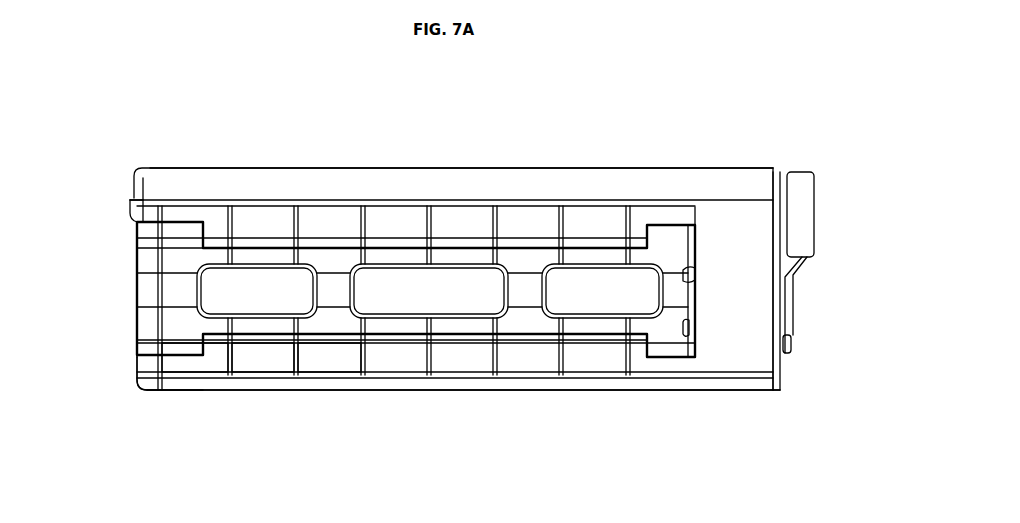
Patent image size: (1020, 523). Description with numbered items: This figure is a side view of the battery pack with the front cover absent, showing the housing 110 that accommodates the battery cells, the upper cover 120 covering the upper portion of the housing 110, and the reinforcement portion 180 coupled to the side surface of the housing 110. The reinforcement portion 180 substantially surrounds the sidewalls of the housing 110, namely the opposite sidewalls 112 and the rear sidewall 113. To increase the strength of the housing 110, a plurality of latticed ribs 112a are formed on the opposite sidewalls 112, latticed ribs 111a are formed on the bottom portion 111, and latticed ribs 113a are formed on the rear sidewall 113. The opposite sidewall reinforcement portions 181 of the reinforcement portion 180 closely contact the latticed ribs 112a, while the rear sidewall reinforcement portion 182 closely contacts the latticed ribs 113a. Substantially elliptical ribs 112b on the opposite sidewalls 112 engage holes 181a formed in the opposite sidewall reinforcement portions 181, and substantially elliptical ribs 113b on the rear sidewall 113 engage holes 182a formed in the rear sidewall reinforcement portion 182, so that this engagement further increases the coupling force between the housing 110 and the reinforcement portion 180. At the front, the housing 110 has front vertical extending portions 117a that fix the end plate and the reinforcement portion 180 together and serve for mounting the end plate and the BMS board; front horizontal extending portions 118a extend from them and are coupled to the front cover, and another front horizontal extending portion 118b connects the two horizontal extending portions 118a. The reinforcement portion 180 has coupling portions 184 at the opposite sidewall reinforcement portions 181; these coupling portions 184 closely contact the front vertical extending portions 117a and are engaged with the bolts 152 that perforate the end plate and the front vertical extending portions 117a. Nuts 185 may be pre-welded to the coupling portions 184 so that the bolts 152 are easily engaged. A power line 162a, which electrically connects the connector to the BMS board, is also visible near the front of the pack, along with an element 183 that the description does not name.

The housing 110 is at (176, 402).
The bottom portion 111 is at (583, 378).
The latticed ribs 111a is at (272, 378).
The sidewalls 112 is at (605, 360).
The latticed ribs 112a is at (343, 340).
The elliptical ribs 112b is at (253, 318).
The rear sidewall 113 is at (157, 222).
The latticed ribs 113a is at (137, 228).
The elliptical ribs 113b is at (135, 257).
The front vertical extending portions 117a is at (740, 297).
The front horizontal extending portions 118a is at (740, 247).
The front horizontal extending portion 118b is at (730, 393).
The upper cover 120 is at (536, 168).
The bolts 152 is at (683, 253).
The power line 162a is at (797, 275).
The reinforcement portion 180 is at (432, 336).
The opposite sidewall reinforcement portions 181 is at (527, 323).
The holes 181a is at (484, 305).
The rear sidewall reinforcement portion 182 is at (135, 340).
The holes 182a is at (137, 327).
The terminal block 183 is at (800, 172).
The coupling portions 184 is at (683, 310).
The nuts 185 is at (687, 263).